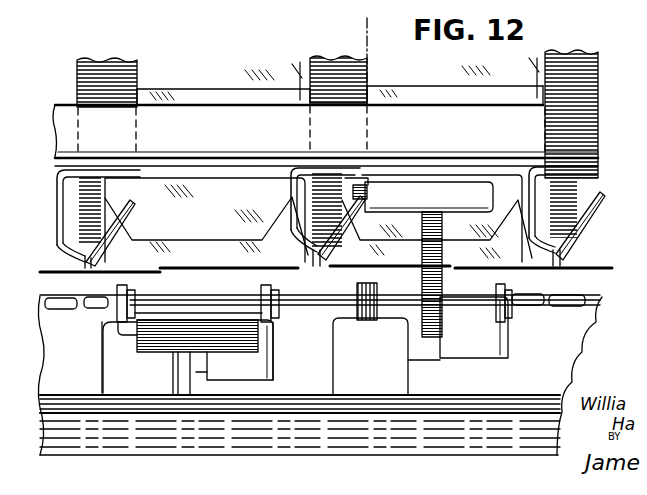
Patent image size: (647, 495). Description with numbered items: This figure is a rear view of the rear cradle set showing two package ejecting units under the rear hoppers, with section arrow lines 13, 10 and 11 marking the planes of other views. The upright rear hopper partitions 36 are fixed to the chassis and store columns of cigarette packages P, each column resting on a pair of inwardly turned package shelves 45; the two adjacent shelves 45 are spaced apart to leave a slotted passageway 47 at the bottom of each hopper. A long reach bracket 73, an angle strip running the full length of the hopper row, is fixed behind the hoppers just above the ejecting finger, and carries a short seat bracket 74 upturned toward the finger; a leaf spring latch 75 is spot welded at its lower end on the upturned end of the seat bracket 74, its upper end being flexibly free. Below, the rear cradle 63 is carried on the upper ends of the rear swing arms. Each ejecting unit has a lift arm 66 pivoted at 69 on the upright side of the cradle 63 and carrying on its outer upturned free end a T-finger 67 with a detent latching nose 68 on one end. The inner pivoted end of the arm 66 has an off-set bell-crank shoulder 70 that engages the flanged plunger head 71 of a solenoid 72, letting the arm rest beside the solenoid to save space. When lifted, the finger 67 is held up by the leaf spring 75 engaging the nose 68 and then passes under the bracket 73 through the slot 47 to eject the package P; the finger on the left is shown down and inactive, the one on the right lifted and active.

The rear hopper partition 36 is at (122, 77).
The long reach bracket 73 is at (185, 117).
The cigarette package P is at (230, 195).
The short seat bracket 74 is at (60, 205).
The leaf spring latch 75 is at (133, 203).
The detent latching nose 68 is at (360, 186).
The T-finger 67 is at (478, 188).
The lift arm 66 is at (430, 235).
The slotted passageway 47 is at (222, 268).
The package shelf 45 is at (593, 263).
The pivot 69 is at (297, 302).
The bell-crank shoulder 70 is at (258, 368).
The plunger head 71 is at (413, 379).
The solenoid 72 is at (370, 356).
The rear cradle 63 is at (143, 430).
The section line 13 is at (367, 22).
The section line 10 is at (82, 470).
The section line 11 is at (315, 470).